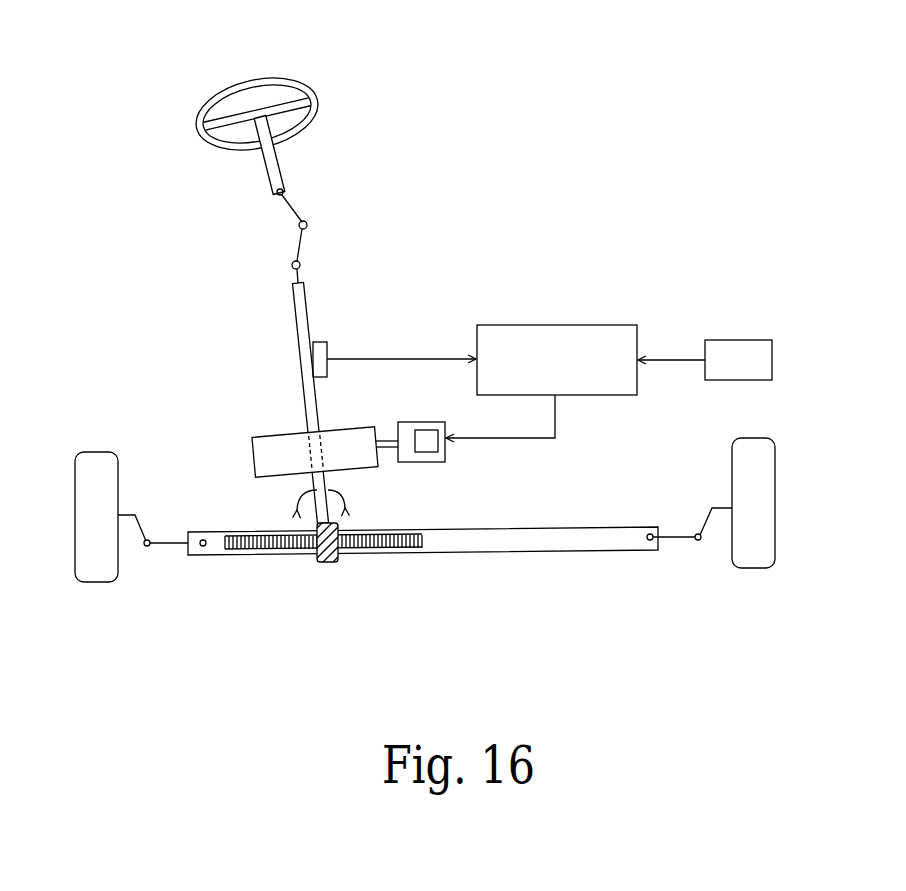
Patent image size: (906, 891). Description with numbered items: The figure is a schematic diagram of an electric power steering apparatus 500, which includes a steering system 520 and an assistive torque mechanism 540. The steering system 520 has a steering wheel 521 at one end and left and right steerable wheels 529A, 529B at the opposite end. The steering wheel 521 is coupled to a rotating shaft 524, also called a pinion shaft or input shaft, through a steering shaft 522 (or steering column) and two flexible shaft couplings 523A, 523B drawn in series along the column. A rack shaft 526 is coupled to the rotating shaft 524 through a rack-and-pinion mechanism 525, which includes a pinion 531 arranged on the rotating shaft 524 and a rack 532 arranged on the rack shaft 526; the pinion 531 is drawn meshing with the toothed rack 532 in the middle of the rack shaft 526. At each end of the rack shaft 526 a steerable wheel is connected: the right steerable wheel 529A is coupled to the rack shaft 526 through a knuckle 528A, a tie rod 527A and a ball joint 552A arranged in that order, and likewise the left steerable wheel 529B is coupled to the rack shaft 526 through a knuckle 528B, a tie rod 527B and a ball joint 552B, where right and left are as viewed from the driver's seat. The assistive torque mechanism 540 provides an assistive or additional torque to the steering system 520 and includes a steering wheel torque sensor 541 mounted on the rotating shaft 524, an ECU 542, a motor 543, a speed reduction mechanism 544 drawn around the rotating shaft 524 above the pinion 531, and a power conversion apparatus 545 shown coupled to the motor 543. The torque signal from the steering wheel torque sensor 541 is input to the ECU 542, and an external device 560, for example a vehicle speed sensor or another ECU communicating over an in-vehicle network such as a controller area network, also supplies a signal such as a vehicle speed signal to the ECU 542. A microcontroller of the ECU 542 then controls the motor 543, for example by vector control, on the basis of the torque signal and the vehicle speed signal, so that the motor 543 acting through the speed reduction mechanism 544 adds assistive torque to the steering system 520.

The electric power steering apparatus 500 is at (470, 86).
The steering system 520 is at (262, 284).
The steering wheel 521 is at (215, 97).
The steering shaft 522 is at (284, 161).
The flexible shaft coupling 523A is at (308, 222).
The flexible shaft coupling 523B is at (301, 262).
The rotating shaft 524 is at (310, 305).
The rack-and-pinion mechanism 525 is at (372, 632).
The rack shaft 526 is at (463, 541).
The tie rod 527A is at (157, 542).
The tie rod 527B is at (697, 535).
The knuckle 528A is at (128, 512).
The knuckle 528B is at (713, 505).
The right steerable wheel 529A is at (103, 567).
The left steerable wheel 529B is at (745, 563).
The pinion 531 is at (338, 564).
The rack 532 is at (283, 556).
The assistive torque mechanism 540 is at (503, 297).
The steering wheel torque sensor 541 is at (327, 343).
The ECU 542 is at (603, 329).
The motor 543 is at (420, 422).
The speed reduction mechanism 544 is at (260, 437).
The power conversion apparatus 545 is at (437, 459).
The ball joint 552A is at (197, 557).
The ball joint 552B is at (647, 549).
The external device 560 is at (737, 339).